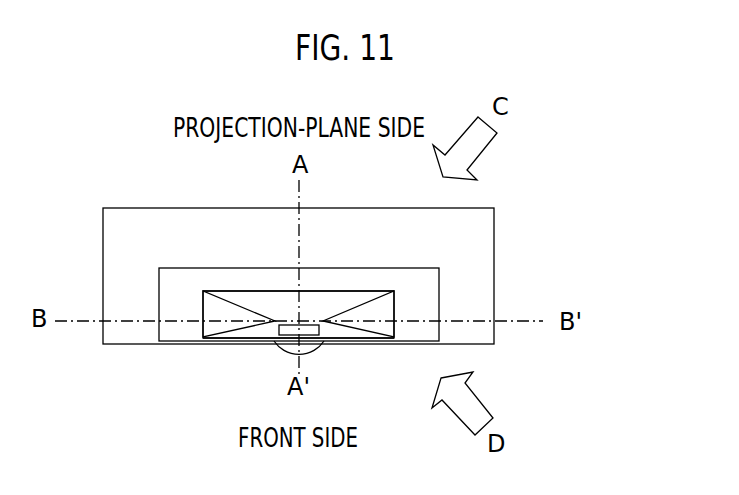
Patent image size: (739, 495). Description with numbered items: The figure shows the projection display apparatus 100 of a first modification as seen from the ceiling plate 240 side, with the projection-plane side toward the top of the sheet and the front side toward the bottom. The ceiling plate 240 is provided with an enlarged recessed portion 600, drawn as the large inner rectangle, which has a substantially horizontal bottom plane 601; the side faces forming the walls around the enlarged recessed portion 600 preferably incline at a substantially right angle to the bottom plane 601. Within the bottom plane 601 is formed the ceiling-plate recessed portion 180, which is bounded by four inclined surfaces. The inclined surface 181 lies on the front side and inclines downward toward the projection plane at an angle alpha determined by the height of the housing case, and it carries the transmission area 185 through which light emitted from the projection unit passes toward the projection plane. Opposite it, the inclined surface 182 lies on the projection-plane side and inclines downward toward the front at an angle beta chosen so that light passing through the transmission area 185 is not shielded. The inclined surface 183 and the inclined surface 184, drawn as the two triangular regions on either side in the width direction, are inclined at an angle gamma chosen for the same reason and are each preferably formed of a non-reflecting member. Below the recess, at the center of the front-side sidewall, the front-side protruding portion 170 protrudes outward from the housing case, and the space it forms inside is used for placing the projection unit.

The projection display apparatus 100 is at (570, 165).
The ceiling plate 240 is at (483, 260).
The enlarged recessed portion 600 is at (281, 265).
The bottom plane 601 is at (325, 282).
The ceiling-plate recessed portion 180 is at (355, 284).
The inclined surface 182 is at (238, 297).
The inclined surface 183 is at (213, 310).
The inclined surface 184 is at (385, 311).
The inclined surface 181 is at (340, 340).
The transmission area 185 is at (280, 334).
The front-side protruding portion 170 is at (270, 348).